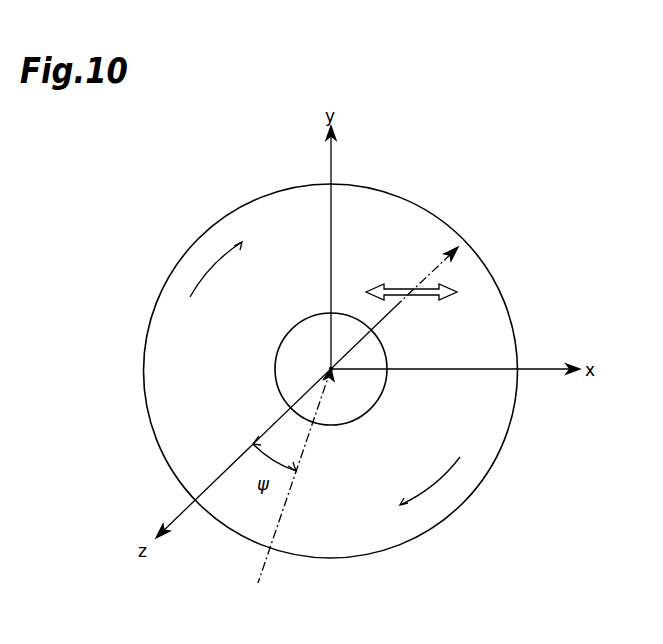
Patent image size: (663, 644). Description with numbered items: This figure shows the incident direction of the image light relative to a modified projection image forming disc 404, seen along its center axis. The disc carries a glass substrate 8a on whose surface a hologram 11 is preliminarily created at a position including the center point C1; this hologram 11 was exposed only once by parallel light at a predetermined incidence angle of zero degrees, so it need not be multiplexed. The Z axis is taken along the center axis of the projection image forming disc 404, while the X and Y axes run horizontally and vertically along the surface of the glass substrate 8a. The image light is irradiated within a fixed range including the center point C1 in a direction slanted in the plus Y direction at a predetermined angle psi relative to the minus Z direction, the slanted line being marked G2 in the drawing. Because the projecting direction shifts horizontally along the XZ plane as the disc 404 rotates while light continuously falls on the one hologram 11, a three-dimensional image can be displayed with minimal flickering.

The projection image forming disc 404 is at (428, 208).
The glass substrate 8a is at (497, 400).
The hologram 11 is at (372, 348).
The center point C1 is at (331, 369).
The gravity direction line G2 is at (268, 558).